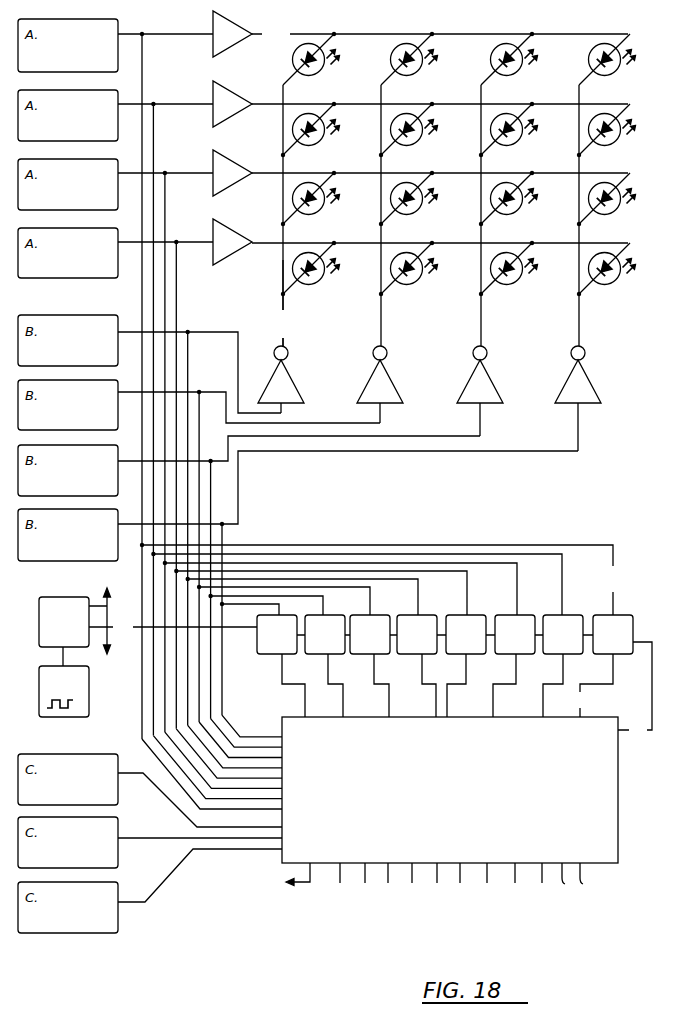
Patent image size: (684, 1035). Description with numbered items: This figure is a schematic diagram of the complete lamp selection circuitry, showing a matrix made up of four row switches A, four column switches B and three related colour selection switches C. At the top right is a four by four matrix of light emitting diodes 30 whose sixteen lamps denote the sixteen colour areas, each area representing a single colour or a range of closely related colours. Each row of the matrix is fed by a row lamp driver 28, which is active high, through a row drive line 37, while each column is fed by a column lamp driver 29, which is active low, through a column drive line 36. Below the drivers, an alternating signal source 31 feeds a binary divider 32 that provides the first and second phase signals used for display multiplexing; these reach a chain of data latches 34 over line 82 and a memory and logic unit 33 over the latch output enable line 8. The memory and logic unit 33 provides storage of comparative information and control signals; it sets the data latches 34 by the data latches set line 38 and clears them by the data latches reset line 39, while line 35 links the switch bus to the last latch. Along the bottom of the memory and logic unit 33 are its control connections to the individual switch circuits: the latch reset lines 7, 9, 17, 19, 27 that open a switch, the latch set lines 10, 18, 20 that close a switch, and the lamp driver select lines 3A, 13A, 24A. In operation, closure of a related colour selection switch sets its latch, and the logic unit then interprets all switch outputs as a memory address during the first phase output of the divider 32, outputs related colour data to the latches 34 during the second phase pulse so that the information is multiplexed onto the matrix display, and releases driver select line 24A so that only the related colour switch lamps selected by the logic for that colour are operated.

The lamp driver 28 is at (232, 138).
The lamp driver 29 is at (429, 398).
The light emitting diode 30 is at (458, 167).
The alternating signal source 31 is at (64, 691).
The binary divider 32 is at (64, 622).
The memory and logic unit 33 is at (450, 790).
The data latches 34 is at (277, 634).
The line 35 is at (381, 580).
The column drive line 36 is at (283, 303).
The row drive line 37 is at (440, 34).
The data latches set line 38 is at (593, 685).
The data latches reset line 39 is at (635, 690).
The line 82 is at (173, 627).
The latch output enable line 8 is at (199, 732).
The latch reset line 7 is at (339, 885).
The latch reset line 9 is at (364, 885).
The latch set line 10 is at (388, 885).
The latch reset line 17 is at (413, 885).
The latch set line 18 is at (438, 885).
The latch reset line 19 is at (461, 885).
The latch set line 20 is at (486, 885).
The latch reset line 27 is at (514, 885).
The lamp driver select line 3A is at (542, 885).
The lamp driver select line 13A is at (567, 885).
The lamp driver select line 24A is at (595, 885).